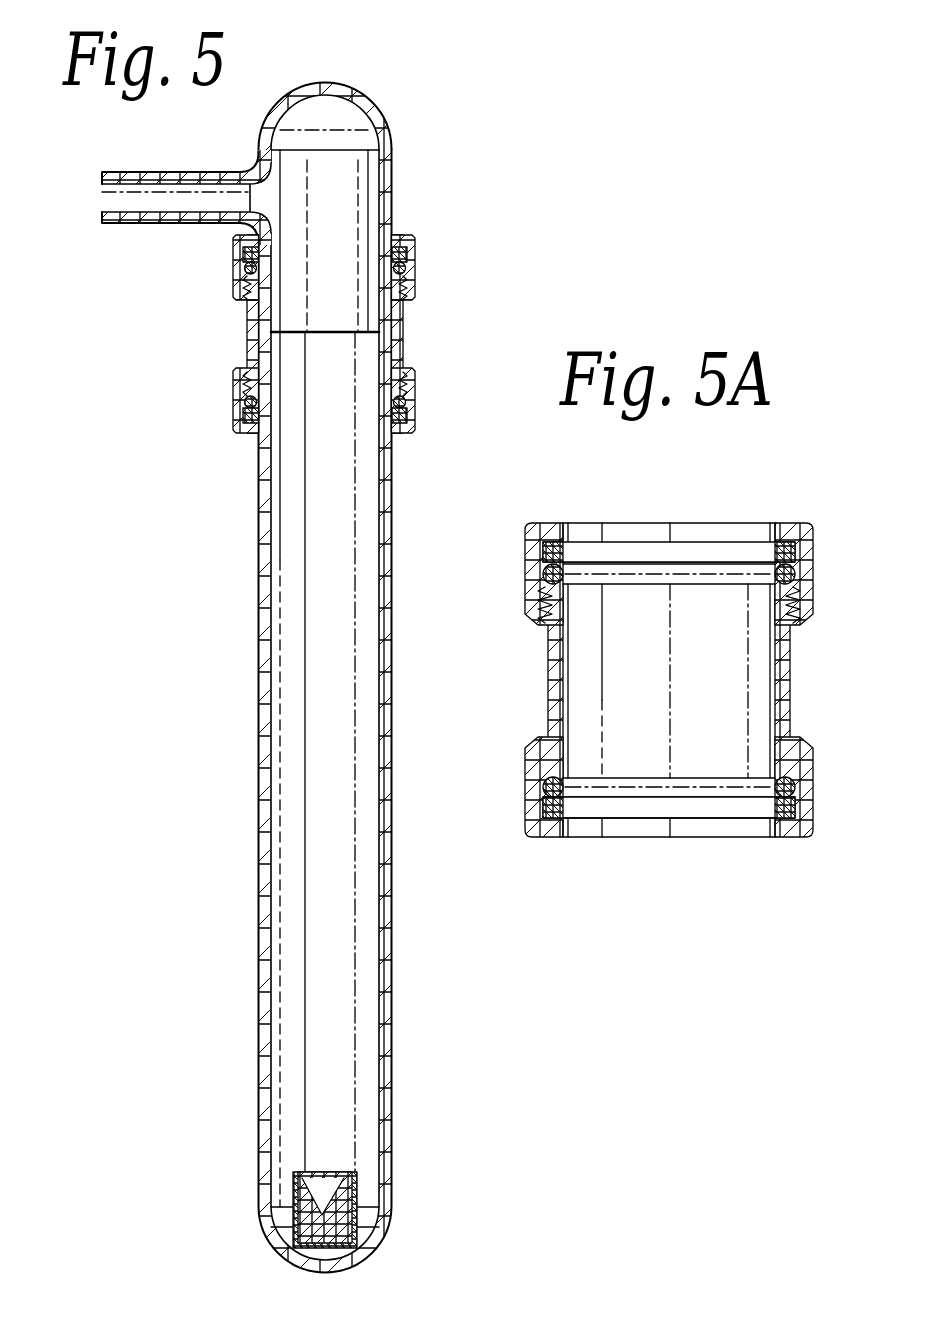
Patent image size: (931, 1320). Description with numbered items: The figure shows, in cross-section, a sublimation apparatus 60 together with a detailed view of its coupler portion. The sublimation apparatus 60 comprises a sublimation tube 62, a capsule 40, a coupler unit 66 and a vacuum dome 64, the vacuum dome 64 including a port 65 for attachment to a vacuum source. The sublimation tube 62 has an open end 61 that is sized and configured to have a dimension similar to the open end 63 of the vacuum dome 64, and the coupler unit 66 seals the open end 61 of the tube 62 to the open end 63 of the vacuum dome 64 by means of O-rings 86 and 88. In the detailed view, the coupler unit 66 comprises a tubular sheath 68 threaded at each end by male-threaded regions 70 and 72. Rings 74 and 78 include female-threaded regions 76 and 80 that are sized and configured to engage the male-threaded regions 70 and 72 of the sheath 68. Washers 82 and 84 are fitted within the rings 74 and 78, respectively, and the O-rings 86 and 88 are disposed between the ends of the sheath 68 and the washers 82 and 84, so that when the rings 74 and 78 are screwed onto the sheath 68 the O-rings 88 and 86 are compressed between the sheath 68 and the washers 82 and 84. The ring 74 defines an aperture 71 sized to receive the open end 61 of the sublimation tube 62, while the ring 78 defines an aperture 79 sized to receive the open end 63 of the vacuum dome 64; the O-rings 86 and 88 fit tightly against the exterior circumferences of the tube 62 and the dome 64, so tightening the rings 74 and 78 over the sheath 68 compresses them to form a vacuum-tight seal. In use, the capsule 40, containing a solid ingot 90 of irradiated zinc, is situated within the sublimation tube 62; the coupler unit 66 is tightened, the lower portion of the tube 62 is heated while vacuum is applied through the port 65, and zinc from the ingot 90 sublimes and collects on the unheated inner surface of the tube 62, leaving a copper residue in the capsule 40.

In FIG. 5, the capsule 40 is at (382, 1214).
In FIG. 5, the sublimation apparatus 60 is at (296, 678).
In FIG. 5, the open end 61 is at (383, 352).
In FIG. 5A, the open end 61 is at (669, 681).
In FIG. 5, the sublimation tube 62 is at (392, 688).
In FIG. 5, the open end 63 is at (393, 330).
In FIG. 5, the vacuum dome 64 is at (392, 203).
In FIG. 5, the port 65 is at (125, 196).
In FIG. 5, the coupler unit 66 is at (338, 358).
In FIG. 5A, the coupler unit 66 is at (662, 671).
In FIG. 5, the tubular sheath 68 is at (250, 326).
In FIG. 5A, the tubular sheath 68 is at (548, 680).
In FIG. 5A, the male-threaded region 70 is at (790, 736).
In FIG. 5A, the aperture 71 is at (762, 835).
In FIG. 5A, the male-threaded region 72 is at (802, 606).
In FIG. 5, the ring 74 is at (233, 420).
In FIG. 5A, the ring 74 is at (813, 800).
In FIG. 5A, the female-threaded region 76 is at (803, 760).
In FIG. 5, the ring 78 is at (243, 263).
In FIG. 5A, the ring 78 is at (813, 548).
In FIG. 5A, the aperture 79 is at (570, 523).
In FIG. 5A, the female-threaded region 80 is at (793, 625).
In FIG. 5, the washer 82 is at (347, 445).
In FIG. 5A, the washer 82 is at (535, 820).
In FIG. 5, the washer 84 is at (243, 251).
In FIG. 5A, the washer 84 is at (548, 551).
In FIG. 5, the O-ring 86 is at (243, 402).
In FIG. 5A, the O-ring 86 is at (548, 787).
In FIG. 5, the O-ring 88 is at (243, 283).
In FIG. 5A, the O-ring 88 is at (548, 578).
In FIG. 5, the solid ingot 90 is at (335, 1230).